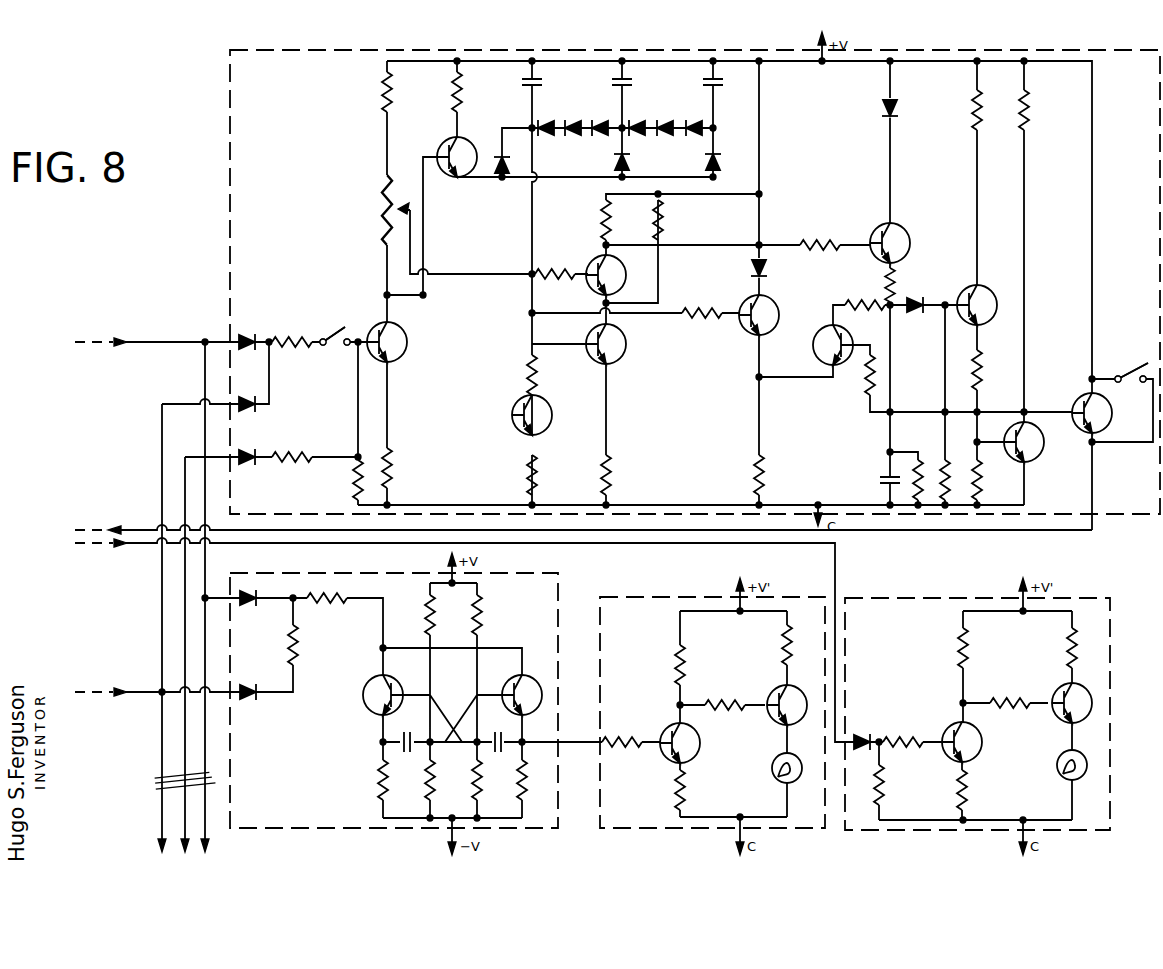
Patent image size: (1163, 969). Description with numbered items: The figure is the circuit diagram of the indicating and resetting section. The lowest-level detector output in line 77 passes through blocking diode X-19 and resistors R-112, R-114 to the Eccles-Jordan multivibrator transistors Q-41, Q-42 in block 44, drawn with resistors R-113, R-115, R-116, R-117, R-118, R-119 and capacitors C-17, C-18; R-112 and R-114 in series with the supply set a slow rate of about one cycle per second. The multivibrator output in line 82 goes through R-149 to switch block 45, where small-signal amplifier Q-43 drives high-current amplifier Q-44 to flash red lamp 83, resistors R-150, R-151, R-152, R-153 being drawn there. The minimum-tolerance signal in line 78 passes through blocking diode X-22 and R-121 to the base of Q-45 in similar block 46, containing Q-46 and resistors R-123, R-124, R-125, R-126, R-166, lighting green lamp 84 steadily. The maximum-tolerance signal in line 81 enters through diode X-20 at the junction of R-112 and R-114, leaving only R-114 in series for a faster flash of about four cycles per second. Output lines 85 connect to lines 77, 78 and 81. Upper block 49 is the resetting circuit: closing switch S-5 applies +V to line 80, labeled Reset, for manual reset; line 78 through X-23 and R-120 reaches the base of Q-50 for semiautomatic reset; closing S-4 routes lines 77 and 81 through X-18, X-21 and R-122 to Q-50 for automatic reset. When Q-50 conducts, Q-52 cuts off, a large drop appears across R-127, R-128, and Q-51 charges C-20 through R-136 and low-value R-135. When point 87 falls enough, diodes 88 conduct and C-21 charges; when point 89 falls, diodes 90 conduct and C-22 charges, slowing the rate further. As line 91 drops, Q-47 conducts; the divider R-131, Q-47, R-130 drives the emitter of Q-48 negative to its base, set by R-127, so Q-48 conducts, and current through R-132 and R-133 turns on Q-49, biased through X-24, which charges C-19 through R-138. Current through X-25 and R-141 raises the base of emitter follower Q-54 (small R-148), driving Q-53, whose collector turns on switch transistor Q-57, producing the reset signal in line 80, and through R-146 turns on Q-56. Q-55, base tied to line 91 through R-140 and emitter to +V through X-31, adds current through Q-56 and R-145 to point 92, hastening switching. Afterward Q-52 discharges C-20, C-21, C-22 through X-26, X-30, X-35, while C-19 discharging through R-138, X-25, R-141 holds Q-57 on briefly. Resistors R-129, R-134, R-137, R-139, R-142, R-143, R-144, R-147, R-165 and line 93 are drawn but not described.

The resetting circuit block 49 is at (228, 136).
The flip-flop circuit 44 is at (394, 573).
The electronic switch circuit block 45 is at (673, 593).
The switch circuit block 46 is at (912, 596).
The output line of maximum tolerance level indicator 81 is at (170, 338).
The reset line 80 is at (149, 525).
The output line of minimum tolerance level detector 78 is at (151, 545).
The output line of lowest level detector switch 77 is at (149, 689).
The output lines 85 is at (152, 778).
The multivibrator output line 82 is at (597, 742).
The red signal lamp 83 is at (817, 779).
The green lamp 84 is at (1046, 780).
The point 87 is at (531, 124).
The diodes 88 is at (597, 122).
The point 89 is at (627, 122).
The diodes 90 is at (696, 122).
The line 91 is at (530, 262).
The point 92 is at (894, 309).
The junction line 93 is at (940, 412).
The reset line Reset is at (990, 532).
The resistor R-128 is at (378, 92).
The resistor R-137 is at (448, 92).
The resistor R-127 is at (378, 210).
The transistor Q-52 is at (443, 148).
The blocking diode X-26 is at (494, 178).
The capacitor C-20 is at (550, 83).
The capacitor C-21 is at (641, 83).
The capacitor C-22 is at (730, 83).
The blocking diode X-30 is at (641, 163).
The blocking diode X-35 is at (729, 163).
The resistor R-132 is at (598, 219).
The resistor R-131 is at (649, 220).
The transistor Q-48 is at (591, 266).
The resistor R-129 is at (555, 287).
The diode X-31 is at (735, 268).
The resistor R-133 is at (818, 233).
The biasing diode X-24 is at (865, 106).
The transistor Q-49 is at (907, 243).
The resistor R-148 is at (966, 111).
The resistor R-147 is at (1014, 115).
The resistor R-139 is at (899, 285).
The resistor R-145 is at (861, 294).
The diode X-25 is at (922, 315).
The emitter follower transistor Q-54 is at (984, 297).
The transistor Q-56 is at (847, 340).
The resistor R-146 is at (860, 377).
The resistor R-143 is at (968, 371).
The switch transistor Q-57 is at (1074, 404).
The switch S-5 is at (1120, 365).
The transistor Q-53 is at (1038, 444).
The capacitor C-19 is at (868, 478).
The resistor R-138 is at (912, 480).
The resistor R-141 is at (939, 480).
The resistor R-142 is at (970, 480).
The resistor R-140 is at (699, 305).
The transistor Q-55 is at (772, 308).
The resistor R-144 is at (748, 476).
The transistor Q-47 is at (623, 344).
The resistor R-130 is at (595, 476).
The resistor R-136 is at (521, 374).
The transistor Q-51 is at (544, 410).
The resistor R-135 is at (521, 476).
The transistor Q-50 is at (393, 334).
The resistor R-134 is at (399, 468).
The switch S-4 is at (335, 328).
The blocking diode X-21 is at (248, 332).
The resistor R-122 is at (292, 354).
The blocking diode X-18 is at (245, 392).
The blocking diode X-23 is at (245, 445).
The resistor R-120 is at (296, 446).
The resistor R-165 is at (347, 482).
The diode X-20 is at (250, 609).
The resistor R-114 is at (329, 590).
The resistor R-112 is at (283, 646).
The blocking diode X-19 is at (250, 705).
The multivibrator transistor Q-41 is at (368, 687).
The multivibrator transistor Q-42 is at (511, 685).
The resistor R-116 is at (419, 616).
The resistor R-118 is at (466, 616).
The capacitor C-17 is at (405, 734).
The capacitor C-18 is at (495, 734).
The resistor R-113 is at (373, 781).
The resistor R-115 is at (419, 781).
The resistor R-117 is at (466, 781).
The resistor R-119 is at (511, 781).
The resistor R-149 is at (622, 732).
The small signal amplifier transistor Q-43 is at (697, 742).
The resistor R-151 is at (670, 666).
The resistor R-150 is at (670, 792).
The resistor R-152 is at (722, 695).
The high current amplifier transistor Q-44 is at (772, 695).
The resistor R-153 is at (777, 645).
The blocking diode X-22 is at (861, 730).
The resistor R-121 is at (906, 754).
The resistor R-166 is at (869, 786).
The transistor Q-45 is at (949, 734).
The resistor R-124 is at (953, 650).
The resistor R-123 is at (953, 790).
The resistor R-125 is at (1010, 714).
The transistor Q-46 is at (1056, 695).
The resistor R-126 is at (1062, 647).